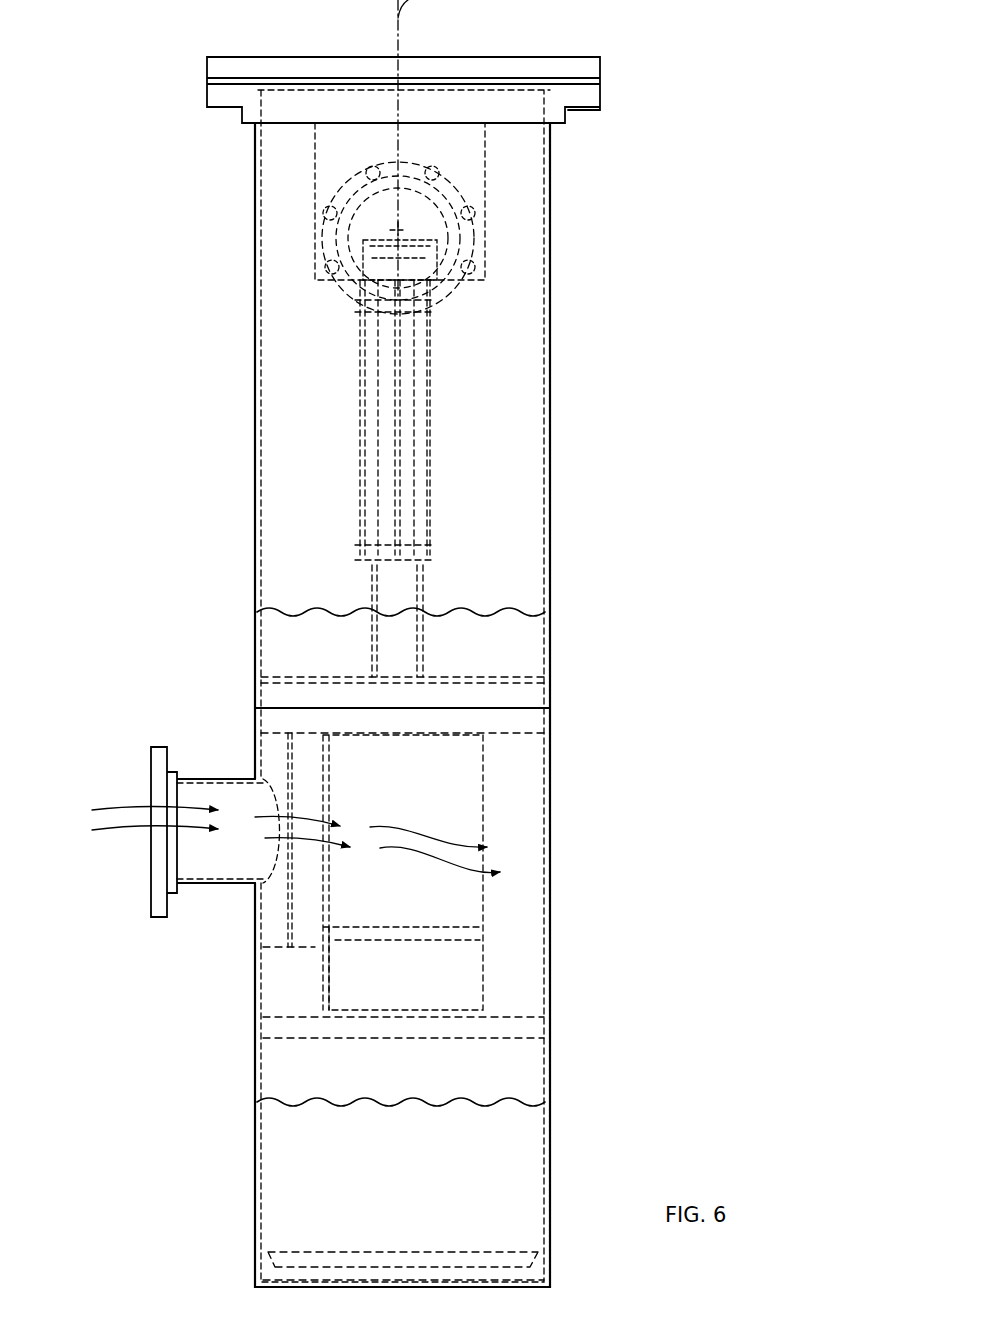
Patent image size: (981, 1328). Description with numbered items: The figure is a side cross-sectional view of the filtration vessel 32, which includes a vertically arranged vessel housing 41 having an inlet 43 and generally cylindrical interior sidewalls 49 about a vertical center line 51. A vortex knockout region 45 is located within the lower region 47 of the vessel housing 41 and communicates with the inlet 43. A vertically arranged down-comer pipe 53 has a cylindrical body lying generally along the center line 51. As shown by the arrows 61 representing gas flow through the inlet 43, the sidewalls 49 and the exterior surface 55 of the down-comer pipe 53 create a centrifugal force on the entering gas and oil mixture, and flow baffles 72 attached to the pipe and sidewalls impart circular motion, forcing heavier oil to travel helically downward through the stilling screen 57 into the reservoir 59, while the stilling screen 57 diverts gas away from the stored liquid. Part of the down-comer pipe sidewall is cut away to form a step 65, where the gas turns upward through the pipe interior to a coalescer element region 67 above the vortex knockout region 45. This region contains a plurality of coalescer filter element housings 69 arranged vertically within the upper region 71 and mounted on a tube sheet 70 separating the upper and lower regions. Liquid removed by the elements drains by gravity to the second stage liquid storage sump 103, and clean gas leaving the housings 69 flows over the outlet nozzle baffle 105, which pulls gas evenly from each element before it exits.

The filtration vessel 32 is at (585, 375).
The vessel housing 41 is at (550, 572).
The inlet 43 is at (150, 888).
The vortex knockout region 45 is at (517, 835).
The lower region 47 is at (545, 982).
The cylindrical interior sidewalls 49 is at (262, 370).
The vertical center line 51 is at (420, 0).
The down-comer pipe 53 is at (485, 768).
The exterior surface 55 is at (327, 960).
The stilling screen 57 is at (490, 1025).
The reservoir 59 is at (523, 1138).
The arrows 61 is at (362, 838).
The step 65 is at (403, 930).
The coalescer element region 67 is at (485, 330).
The coalescer filter element housings 69 is at (430, 542).
The tube sheet 70 is at (498, 677).
The upper region 71 is at (543, 265).
The flow baffles 72 is at (278, 902).
The second stage liquid storage sump 103 is at (537, 645).
The outlet nozzle baffle 105 is at (490, 152).